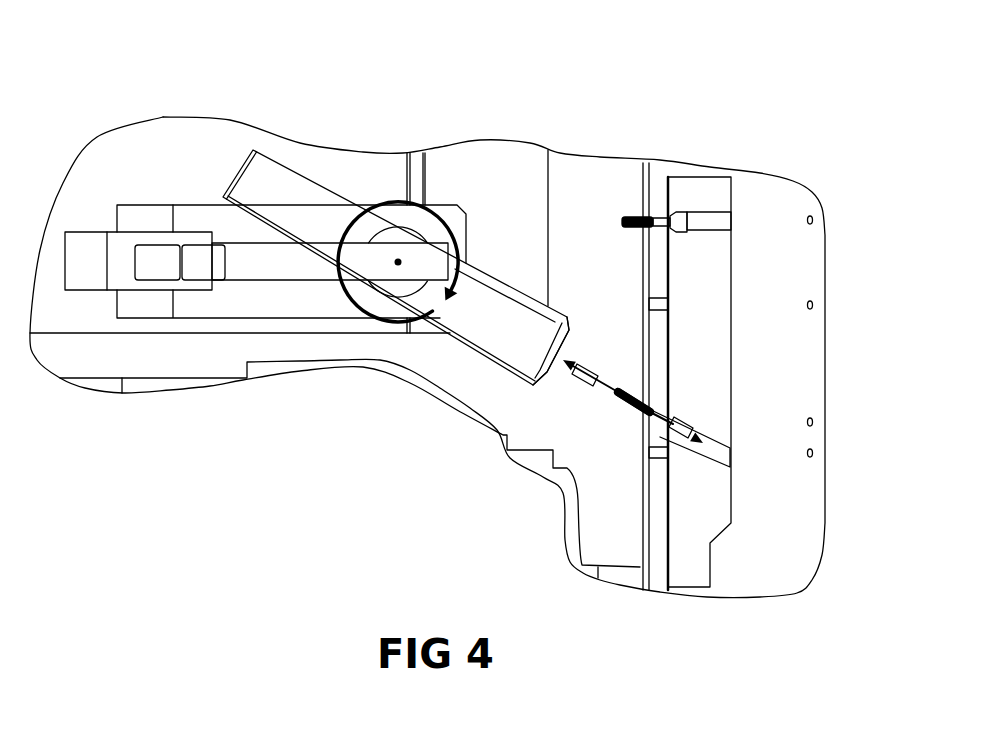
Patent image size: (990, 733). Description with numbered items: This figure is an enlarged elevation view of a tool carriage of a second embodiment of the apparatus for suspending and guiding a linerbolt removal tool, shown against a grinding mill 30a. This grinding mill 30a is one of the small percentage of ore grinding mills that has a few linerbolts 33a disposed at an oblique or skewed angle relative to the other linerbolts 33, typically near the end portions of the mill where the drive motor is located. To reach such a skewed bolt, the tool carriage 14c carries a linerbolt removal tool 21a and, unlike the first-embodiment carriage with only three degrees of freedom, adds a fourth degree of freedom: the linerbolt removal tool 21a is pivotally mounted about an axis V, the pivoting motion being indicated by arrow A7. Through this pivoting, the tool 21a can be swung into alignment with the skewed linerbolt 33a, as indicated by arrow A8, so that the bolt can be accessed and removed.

The tool carriage 14c is at (278, 183).
The axis V is at (398, 262).
The arrow A7 is at (445, 205).
The linerbolts 33 is at (620, 218).
The grinding mill 30a is at (773, 267).
The arrow A8 is at (617, 387).
The linerbolt 33a is at (687, 424).
The linerbolt removal tool 21a is at (560, 365).